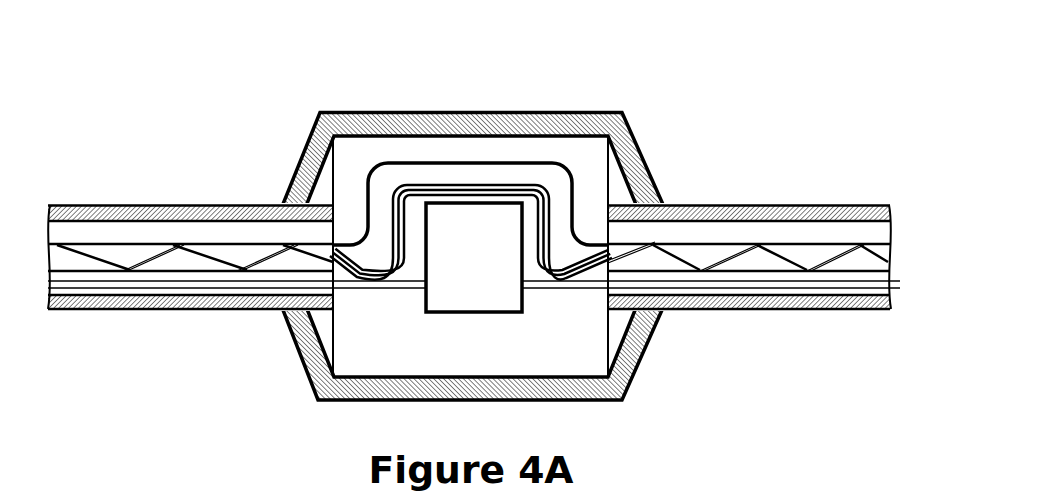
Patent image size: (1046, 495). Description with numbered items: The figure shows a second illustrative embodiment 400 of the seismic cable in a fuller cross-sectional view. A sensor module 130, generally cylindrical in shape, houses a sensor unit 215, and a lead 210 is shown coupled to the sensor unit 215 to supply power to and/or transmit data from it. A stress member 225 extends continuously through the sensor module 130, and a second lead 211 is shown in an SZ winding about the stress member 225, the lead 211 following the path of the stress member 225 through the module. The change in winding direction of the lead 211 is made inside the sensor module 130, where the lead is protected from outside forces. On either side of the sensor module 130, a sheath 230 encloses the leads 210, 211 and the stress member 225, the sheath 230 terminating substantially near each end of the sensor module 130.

The second illustrative embodiment of the seismic cable 400 is at (170, 73).
The sensor module 130 is at (481, 76).
The sheath 230 is at (176, 203).
The stress member 225 is at (405, 160).
The lead 211 is at (490, 185).
The lead 210 is at (360, 293).
The sensor unit 215 is at (490, 268).